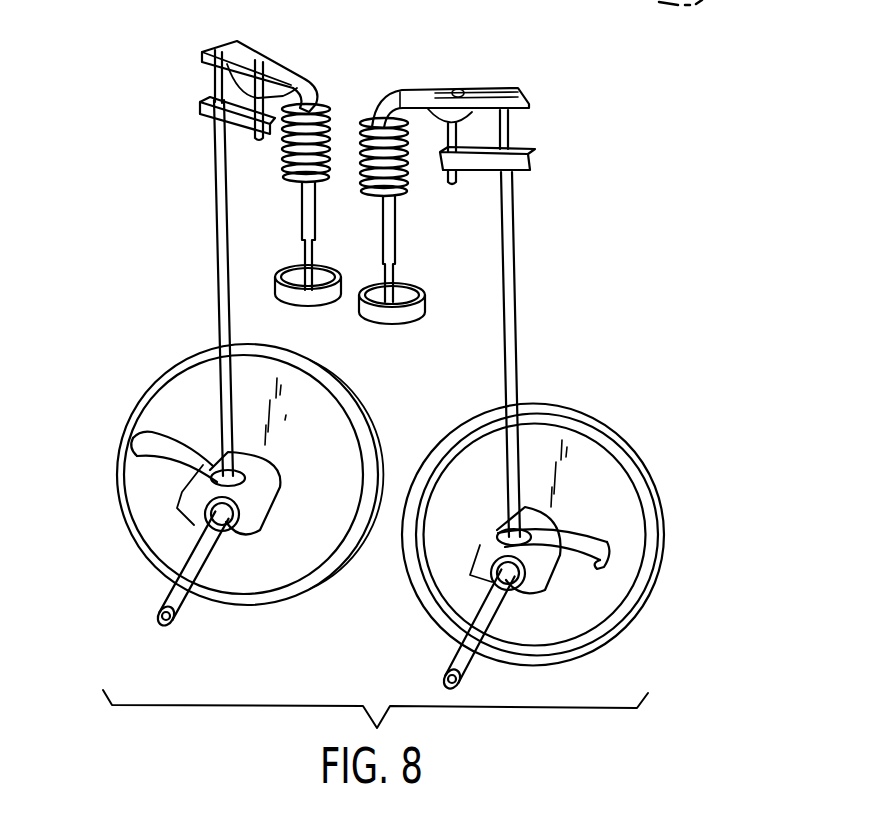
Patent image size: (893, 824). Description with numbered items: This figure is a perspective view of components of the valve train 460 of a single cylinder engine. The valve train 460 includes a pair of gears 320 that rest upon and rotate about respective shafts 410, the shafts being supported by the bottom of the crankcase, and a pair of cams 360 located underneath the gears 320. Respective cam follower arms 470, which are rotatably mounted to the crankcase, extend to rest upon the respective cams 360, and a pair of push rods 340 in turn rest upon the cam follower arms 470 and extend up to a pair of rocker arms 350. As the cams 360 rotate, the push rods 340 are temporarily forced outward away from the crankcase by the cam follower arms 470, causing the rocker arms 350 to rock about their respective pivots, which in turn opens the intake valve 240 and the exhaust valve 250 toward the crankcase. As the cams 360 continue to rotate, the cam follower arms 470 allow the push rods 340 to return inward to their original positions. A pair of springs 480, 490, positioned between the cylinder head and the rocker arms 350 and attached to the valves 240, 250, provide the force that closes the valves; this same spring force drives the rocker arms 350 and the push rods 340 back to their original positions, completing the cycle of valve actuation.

The intake valve 240 is at (424, 289).
The exhaust valve 250 is at (334, 270).
The gears 320 is at (430, 458).
The push rods 340 is at (216, 226).
The rocker arms 350 is at (275, 67).
The cams 360 is at (259, 545).
The shafts 410 is at (158, 594).
The valve train 460 is at (116, 139).
The cam follower arms 470 is at (205, 470).
The spring 480 is at (362, 118).
The spring 490 is at (327, 102).